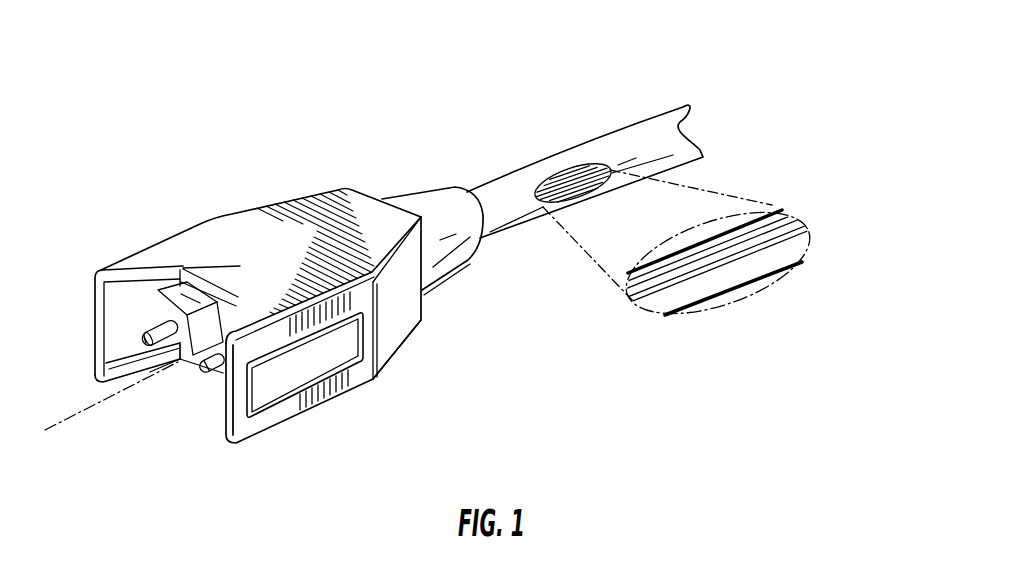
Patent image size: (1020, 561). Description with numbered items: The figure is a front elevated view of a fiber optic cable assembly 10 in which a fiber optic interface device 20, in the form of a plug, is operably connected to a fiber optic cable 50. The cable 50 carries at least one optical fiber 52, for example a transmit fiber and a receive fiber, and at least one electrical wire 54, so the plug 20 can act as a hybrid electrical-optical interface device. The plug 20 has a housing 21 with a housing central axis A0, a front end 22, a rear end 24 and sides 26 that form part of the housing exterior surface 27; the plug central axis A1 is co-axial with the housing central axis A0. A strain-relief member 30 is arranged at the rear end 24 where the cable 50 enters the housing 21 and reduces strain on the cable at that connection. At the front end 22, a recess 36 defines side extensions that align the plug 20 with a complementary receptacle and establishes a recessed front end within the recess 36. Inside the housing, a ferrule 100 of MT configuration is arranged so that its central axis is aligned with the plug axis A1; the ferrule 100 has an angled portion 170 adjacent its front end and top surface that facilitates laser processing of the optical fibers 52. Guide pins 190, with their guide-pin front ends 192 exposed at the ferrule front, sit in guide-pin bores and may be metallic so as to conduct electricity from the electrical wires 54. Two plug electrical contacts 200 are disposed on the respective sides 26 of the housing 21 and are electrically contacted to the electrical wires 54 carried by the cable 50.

The fiber optic cable assembly 10 is at (148, 48).
The fiber optic interface device 20 is at (196, 196).
The housing 21 is at (263, 222).
The front end 22 is at (74, 336).
The rear end 24 is at (392, 195).
The sides 26 is at (345, 305).
The housing exterior surface 27 is at (404, 285).
The strain-relief member 30 is at (452, 248).
The recess 36 is at (173, 402).
The fiber optic cable 50 is at (638, 150).
The optical fiber 52 is at (756, 257).
The electrical wire 54 is at (727, 233).
The ferrule 100 is at (178, 296).
The angled portion 170 is at (200, 325).
The guide pins 190 is at (205, 370).
The guide-pin front ends 192 is at (150, 337).
The plug electrical contacts 200 is at (287, 370).
The plug central axis A1 is at (478, 170).
The housing central axis A0 is at (80, 415).